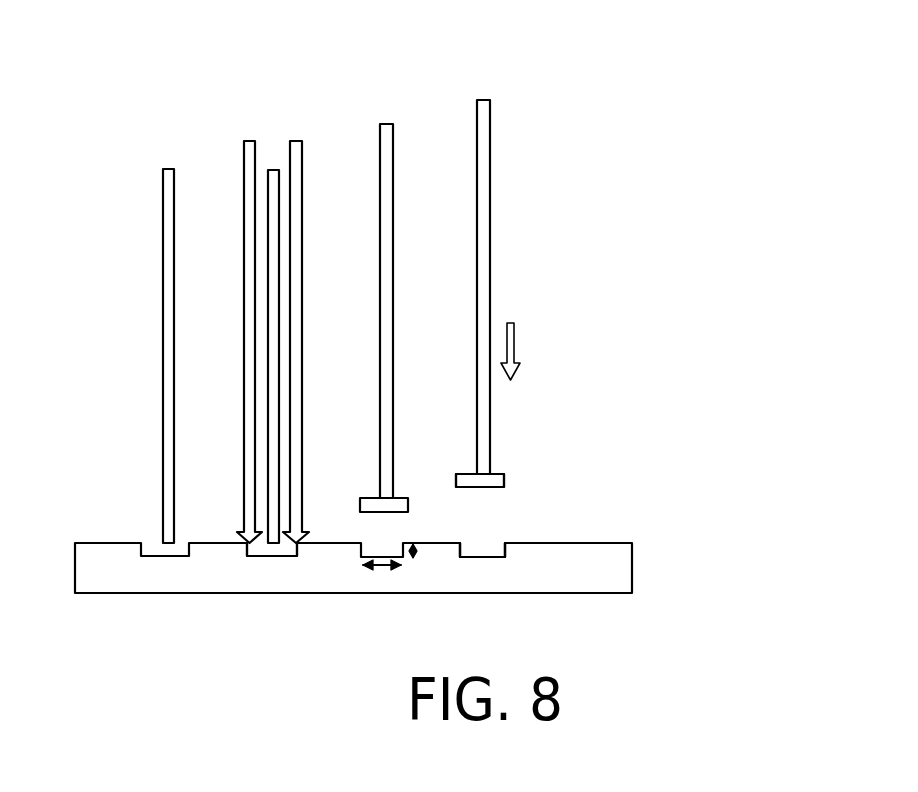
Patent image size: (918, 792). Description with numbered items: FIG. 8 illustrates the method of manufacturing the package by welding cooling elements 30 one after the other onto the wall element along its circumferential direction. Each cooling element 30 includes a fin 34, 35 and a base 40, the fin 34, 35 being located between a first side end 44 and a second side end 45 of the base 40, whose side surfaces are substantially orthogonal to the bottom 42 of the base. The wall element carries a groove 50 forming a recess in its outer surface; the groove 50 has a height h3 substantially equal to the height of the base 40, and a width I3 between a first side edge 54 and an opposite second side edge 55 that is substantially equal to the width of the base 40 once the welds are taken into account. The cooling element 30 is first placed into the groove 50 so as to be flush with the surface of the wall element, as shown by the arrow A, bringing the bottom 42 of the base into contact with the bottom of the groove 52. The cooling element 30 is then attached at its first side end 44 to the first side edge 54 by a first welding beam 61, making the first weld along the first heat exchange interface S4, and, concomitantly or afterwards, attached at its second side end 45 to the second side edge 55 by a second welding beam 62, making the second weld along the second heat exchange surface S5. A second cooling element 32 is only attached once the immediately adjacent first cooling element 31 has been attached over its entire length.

The cooling element 30 is at (511, 164).
The first cooling element 31 is at (273, 180).
The second cooling element 32 is at (388, 268).
The fin 34 is at (110, 356).
The fin 35 is at (168, 318).
The base 40 is at (268, 556).
The bottom of the base 42 is at (490, 489).
The first side end 44 is at (456, 474).
The second side end 45 is at (504, 474).
The groove 50 is at (494, 546).
The bottom of the groove 52 is at (465, 553).
The first side edge 54 is at (470, 555).
The second side edge 55 is at (507, 546).
The first welding beam 61 is at (248, 262).
The second welding beam 62 is at (297, 262).
The arrow A is at (514, 322).
The first heat exchange interface S4 is at (247, 556).
The second heat exchange surface S5 is at (297, 556).
The width of the groove I3 is at (380, 566).
The height of the groove h3 is at (413, 557).